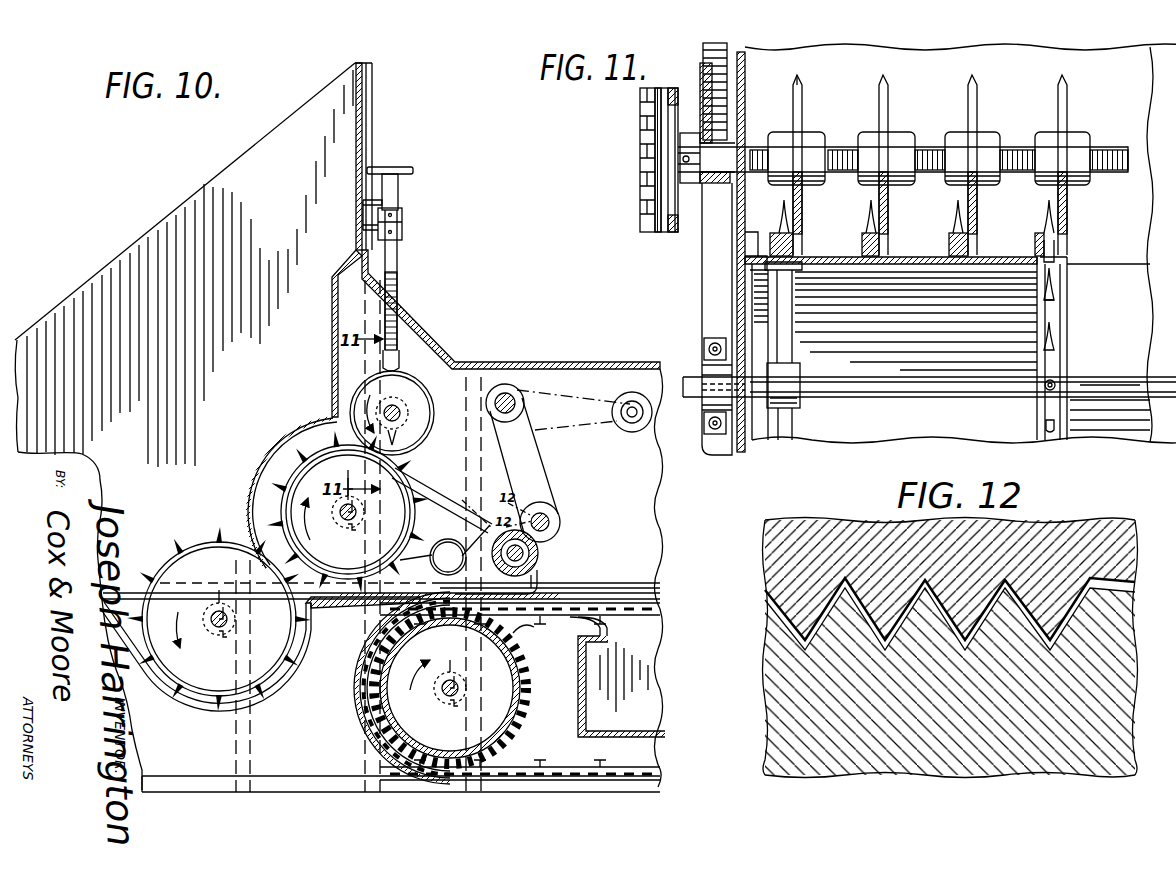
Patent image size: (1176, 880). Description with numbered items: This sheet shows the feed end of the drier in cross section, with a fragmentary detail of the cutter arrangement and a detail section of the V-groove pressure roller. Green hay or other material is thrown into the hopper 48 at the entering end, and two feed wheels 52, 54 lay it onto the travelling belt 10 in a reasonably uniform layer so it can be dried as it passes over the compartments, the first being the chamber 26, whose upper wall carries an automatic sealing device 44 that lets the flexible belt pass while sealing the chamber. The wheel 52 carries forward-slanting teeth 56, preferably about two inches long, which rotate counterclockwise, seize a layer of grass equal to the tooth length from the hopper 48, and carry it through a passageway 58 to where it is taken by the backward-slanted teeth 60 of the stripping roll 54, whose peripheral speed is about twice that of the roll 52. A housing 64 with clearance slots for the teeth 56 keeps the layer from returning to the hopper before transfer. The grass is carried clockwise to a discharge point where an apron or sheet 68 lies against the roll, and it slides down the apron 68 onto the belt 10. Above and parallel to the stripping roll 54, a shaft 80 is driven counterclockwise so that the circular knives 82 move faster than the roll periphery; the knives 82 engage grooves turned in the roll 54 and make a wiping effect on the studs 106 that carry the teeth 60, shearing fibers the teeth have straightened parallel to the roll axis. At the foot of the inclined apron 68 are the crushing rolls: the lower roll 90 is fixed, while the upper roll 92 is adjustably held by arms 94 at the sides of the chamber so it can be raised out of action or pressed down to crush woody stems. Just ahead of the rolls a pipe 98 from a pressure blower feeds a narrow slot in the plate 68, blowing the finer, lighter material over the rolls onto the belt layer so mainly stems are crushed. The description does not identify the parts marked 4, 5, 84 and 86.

In FIG. 10, the sprocket 4 is at (498, 715).
In FIG. 10, the section line 5 is at (573, 392).
In FIG. 10, the travelling belt 10 is at (630, 598).
In FIG. 10, the chamber 26 is at (640, 698).
In FIG. 10, the automatic sealing device 44 is at (612, 633).
In FIG. 10, the hopper 48 is at (184, 218).
In FIG. 10, the feed wheel 52 is at (170, 556).
In FIG. 10, the stripping roll 54 is at (302, 447).
In FIG. 11, the stripping roll 54 is at (1130, 300).
In FIG. 10, the teeth 56 is at (182, 682).
In FIG. 10, the passageway 58 is at (278, 680).
In FIG. 10, the teeth 60 is at (270, 506).
In FIG. 11, the teeth 60 is at (876, 216).
In FIG. 10, the housing 64 is at (270, 465).
In FIG. 10, the apron 68 is at (450, 538).
In FIG. 10, the shaft 80 is at (398, 408).
In FIG. 11, the shaft 80 is at (1108, 147).
In FIG. 10, the circular knives 82 is at (396, 398).
In FIG. 11, the circular knives 82 is at (888, 80).
In FIG. 10, the adjusting screw 84 is at (398, 277).
In FIG. 11, the adjusting screw 84 is at (797, 88).
In FIG. 10, the handwheel 86 is at (398, 168).
In FIG. 10, the crushing roll 90 is at (541, 557).
In FIG. 12, the crushing roll 90 is at (950, 678).
In FIG. 10, the upper roll 92 is at (634, 398).
In FIG. 12, the upper roll 92 is at (950, 647).
In FIG. 10, the arms 94 is at (525, 453).
In FIG. 10, the pipe 98 is at (423, 550).
In FIG. 11, the studs 106 is at (975, 246).